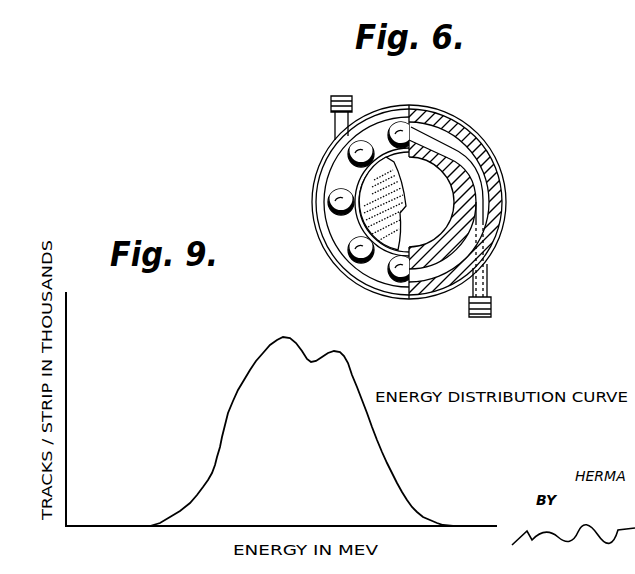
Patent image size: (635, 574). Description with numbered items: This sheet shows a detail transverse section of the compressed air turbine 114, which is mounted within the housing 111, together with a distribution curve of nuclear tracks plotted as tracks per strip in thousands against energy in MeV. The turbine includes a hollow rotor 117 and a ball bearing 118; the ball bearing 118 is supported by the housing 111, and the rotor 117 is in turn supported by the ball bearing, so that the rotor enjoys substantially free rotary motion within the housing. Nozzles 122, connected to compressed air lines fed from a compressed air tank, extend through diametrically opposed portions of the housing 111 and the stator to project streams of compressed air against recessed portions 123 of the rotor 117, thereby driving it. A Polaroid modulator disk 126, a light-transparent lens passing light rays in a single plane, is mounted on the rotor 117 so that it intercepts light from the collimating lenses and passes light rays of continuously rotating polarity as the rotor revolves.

The housing 111 is at (373, 290).
The compressed air turbine 114 is at (435, 256).
The hollow rotor 117 is at (459, 184).
The ball bearing 118 is at (350, 252).
The nozzles 122 is at (336, 126).
The recessed portions 123 is at (474, 172).
The Polaroid modulator disk 126 is at (401, 212).